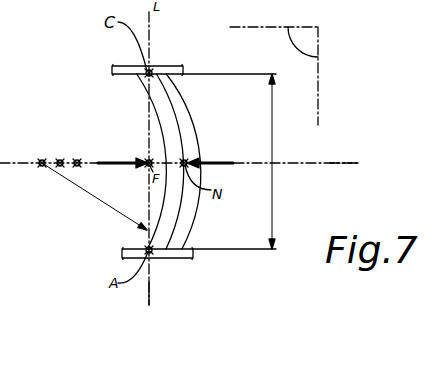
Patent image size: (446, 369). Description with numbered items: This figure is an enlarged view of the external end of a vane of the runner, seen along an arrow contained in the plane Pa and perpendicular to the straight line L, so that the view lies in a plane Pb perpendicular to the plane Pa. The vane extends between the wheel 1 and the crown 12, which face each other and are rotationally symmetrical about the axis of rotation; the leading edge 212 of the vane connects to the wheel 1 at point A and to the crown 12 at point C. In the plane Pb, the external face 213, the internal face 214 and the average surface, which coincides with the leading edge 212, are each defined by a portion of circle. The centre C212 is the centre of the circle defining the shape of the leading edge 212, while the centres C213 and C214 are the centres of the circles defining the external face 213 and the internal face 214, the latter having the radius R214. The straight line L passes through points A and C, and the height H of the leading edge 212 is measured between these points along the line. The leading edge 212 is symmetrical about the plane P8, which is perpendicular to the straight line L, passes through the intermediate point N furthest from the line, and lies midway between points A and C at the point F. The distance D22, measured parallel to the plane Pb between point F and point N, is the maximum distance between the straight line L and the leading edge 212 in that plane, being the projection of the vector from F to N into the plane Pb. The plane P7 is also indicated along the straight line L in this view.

The wheel 1 is at (177, 259).
The crown 12 is at (165, 70).
The leading edge 212 is at (162, 94).
The external face 213 is at (77, 163).
The internal face 214 is at (137, 81).
The centre of the circle defining the leading edge C212 is at (60, 158).
The centre of the circle defining the external surface C213 is at (77, 158).
The centre of the circle defining the internal surface C214 is at (43, 167).
The radius of the internal surface circle R214 is at (94, 196).
The distance between point F and point N D22 is at (165, 172).
The height of the leading edge H is at (230, 161).
The plane Pb is at (274, 76).
The reference plane P7 is at (159, 292).
The plane P8 is at (355, 163).